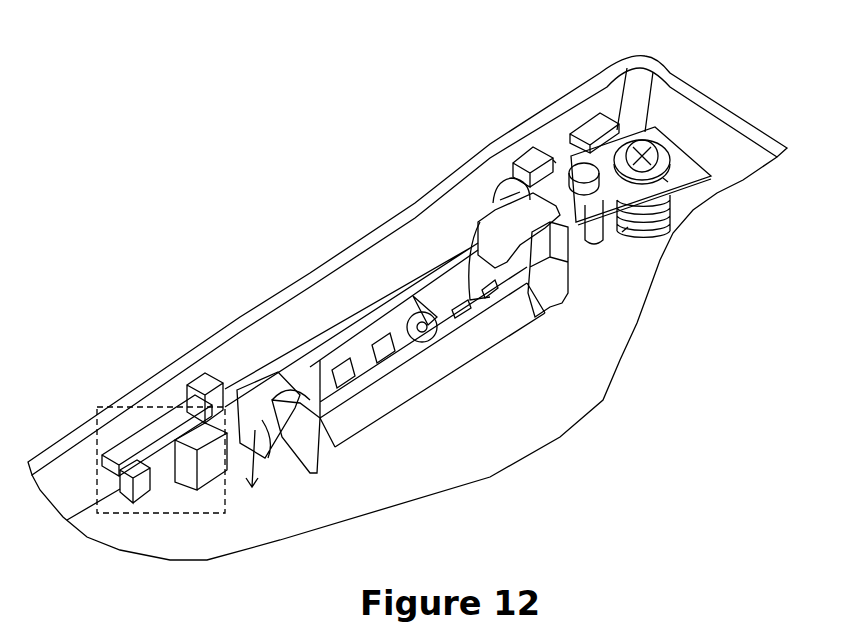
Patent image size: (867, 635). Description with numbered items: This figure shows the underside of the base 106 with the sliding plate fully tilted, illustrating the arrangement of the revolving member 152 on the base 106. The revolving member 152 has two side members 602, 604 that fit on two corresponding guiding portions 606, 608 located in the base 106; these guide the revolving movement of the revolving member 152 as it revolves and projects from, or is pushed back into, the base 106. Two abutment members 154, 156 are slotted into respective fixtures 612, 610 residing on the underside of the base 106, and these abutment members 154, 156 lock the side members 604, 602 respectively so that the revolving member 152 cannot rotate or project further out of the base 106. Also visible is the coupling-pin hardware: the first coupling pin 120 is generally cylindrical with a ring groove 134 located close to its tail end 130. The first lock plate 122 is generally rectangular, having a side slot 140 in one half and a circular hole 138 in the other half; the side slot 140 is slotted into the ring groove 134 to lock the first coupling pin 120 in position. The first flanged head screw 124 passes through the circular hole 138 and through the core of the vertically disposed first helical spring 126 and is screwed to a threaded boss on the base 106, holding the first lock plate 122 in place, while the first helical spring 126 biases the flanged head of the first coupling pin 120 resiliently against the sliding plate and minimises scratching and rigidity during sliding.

The base 106 is at (687, 87).
The fixture 612 is at (592, 130).
The abutment member 154 is at (530, 157).
The tail end 130 is at (578, 163).
The side member 604 is at (528, 217).
The guiding portion 608 is at (560, 258).
The first lock plate 122 is at (741, 201).
The first flanged head screw 124 is at (660, 153).
The first helical spring 126 is at (667, 218).
The circular hole 138 is at (663, 178).
The first coupling pin 120 is at (628, 227).
The ring groove 134 is at (603, 215).
The side slot 140 is at (553, 160).
The abutment member 156 is at (177, 430).
The fixture 610 is at (65, 421).
The revolving member 152 is at (249, 471).
The side member 602 is at (278, 418).
The guiding portion 606 is at (310, 438).